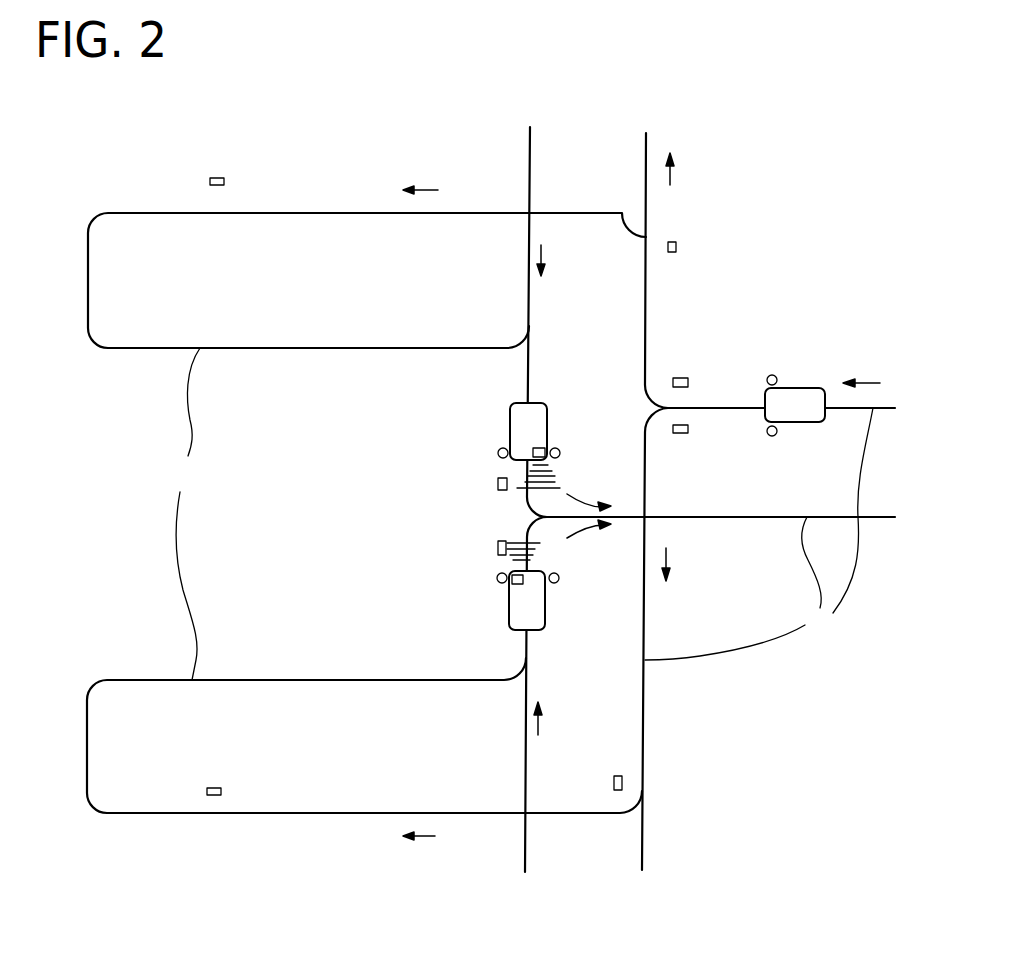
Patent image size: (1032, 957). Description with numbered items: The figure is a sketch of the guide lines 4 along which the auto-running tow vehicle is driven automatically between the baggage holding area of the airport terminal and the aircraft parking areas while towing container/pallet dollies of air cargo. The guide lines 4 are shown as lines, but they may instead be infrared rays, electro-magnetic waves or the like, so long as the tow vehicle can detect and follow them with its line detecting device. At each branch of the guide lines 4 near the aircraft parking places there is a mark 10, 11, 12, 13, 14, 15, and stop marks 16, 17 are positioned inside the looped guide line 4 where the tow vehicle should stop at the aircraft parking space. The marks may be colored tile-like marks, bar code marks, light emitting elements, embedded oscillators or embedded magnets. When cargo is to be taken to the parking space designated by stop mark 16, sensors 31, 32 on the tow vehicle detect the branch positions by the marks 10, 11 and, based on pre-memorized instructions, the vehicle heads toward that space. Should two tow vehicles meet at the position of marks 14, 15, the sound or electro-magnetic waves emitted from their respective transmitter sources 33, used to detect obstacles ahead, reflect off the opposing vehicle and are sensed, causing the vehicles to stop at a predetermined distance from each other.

The guide line 4 is at (522, 514).
The sensor 31 is at (799, 398).
The sensor 32 is at (517, 420).
The transmitter source 33 is at (517, 617).
The mark 10 is at (680, 376).
The mark 11 is at (677, 247).
The mark 12 is at (679, 435).
The mark 13 is at (617, 775).
The mark 14 is at (497, 483).
The mark 15 is at (497, 548).
The stop mark 16 is at (216, 176).
The stop mark 17 is at (212, 786).